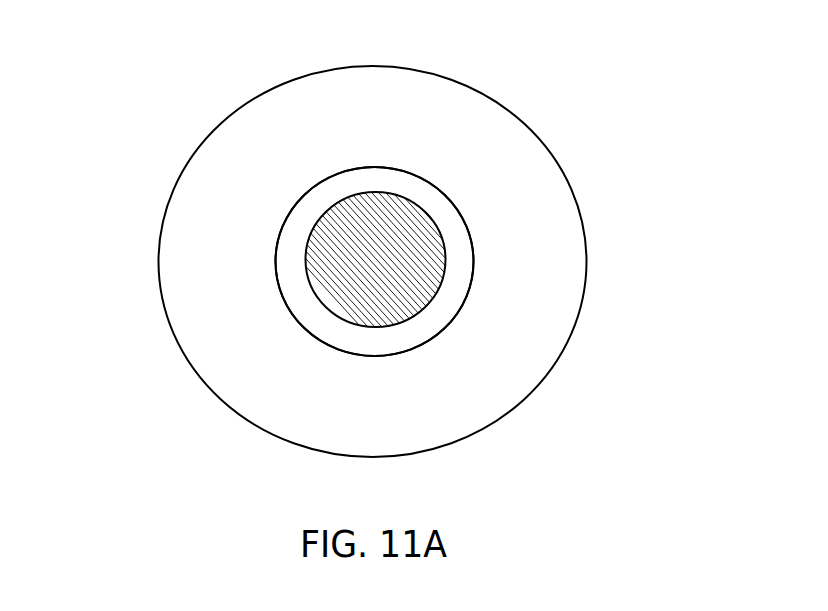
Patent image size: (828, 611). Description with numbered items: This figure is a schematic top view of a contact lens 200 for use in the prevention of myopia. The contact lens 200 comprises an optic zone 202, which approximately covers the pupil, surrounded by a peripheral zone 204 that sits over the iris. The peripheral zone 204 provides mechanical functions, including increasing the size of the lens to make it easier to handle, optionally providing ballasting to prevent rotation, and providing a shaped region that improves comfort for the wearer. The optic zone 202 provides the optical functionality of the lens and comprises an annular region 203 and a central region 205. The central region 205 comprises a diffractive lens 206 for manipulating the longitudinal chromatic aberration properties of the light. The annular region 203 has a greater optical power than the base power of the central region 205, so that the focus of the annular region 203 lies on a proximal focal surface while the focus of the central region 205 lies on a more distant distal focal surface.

The contact lens 200 is at (357, 238).
The optic zone 202 is at (428, 171).
The annular region 203 is at (455, 283).
The peripheral zone 204 is at (526, 198).
The central region 205 is at (353, 270).
The diffractive lens 206 is at (391, 316).